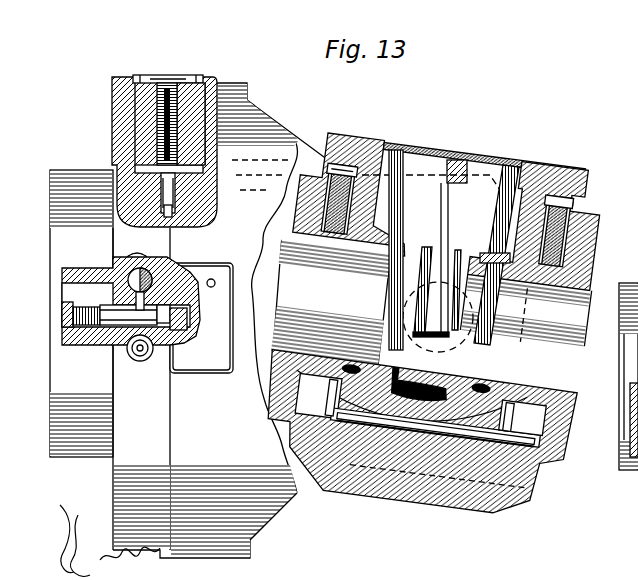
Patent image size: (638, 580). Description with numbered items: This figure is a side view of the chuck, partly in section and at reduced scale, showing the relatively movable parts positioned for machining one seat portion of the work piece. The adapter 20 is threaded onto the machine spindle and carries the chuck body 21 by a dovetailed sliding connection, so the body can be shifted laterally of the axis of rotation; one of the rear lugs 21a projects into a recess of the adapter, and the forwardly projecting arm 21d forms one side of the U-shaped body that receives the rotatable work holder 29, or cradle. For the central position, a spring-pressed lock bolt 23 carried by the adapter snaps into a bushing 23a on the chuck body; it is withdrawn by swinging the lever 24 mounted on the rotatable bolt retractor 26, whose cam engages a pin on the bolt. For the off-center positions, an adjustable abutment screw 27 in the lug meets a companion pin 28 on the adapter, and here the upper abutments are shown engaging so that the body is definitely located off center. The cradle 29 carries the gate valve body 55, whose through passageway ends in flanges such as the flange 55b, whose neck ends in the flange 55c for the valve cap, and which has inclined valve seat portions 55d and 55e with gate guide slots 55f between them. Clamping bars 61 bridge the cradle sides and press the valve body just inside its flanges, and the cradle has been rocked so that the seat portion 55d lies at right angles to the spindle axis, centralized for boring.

The adapter 20 is at (150, 141).
The chuck body 21 is at (230, 96).
The lug 21a is at (203, 86).
The arm 21d is at (306, 496).
The lock bolt 23 is at (131, 288).
The bushing 23a is at (201, 318).
The lever 24 is at (127, 350).
The bolt retractor 26 is at (152, 263).
The screw 27 is at (166, 84).
The pin 28 is at (190, 224).
The work holder 29 is at (415, 445).
The valve body 55 is at (549, 233).
The flange 55b is at (323, 189).
The flange 55c is at (489, 146).
The valve seat portion 55d is at (346, 273).
The valve seat portion 55e is at (468, 305).
The slot 55f is at (448, 228).
The clamping bar 61 is at (472, 187).